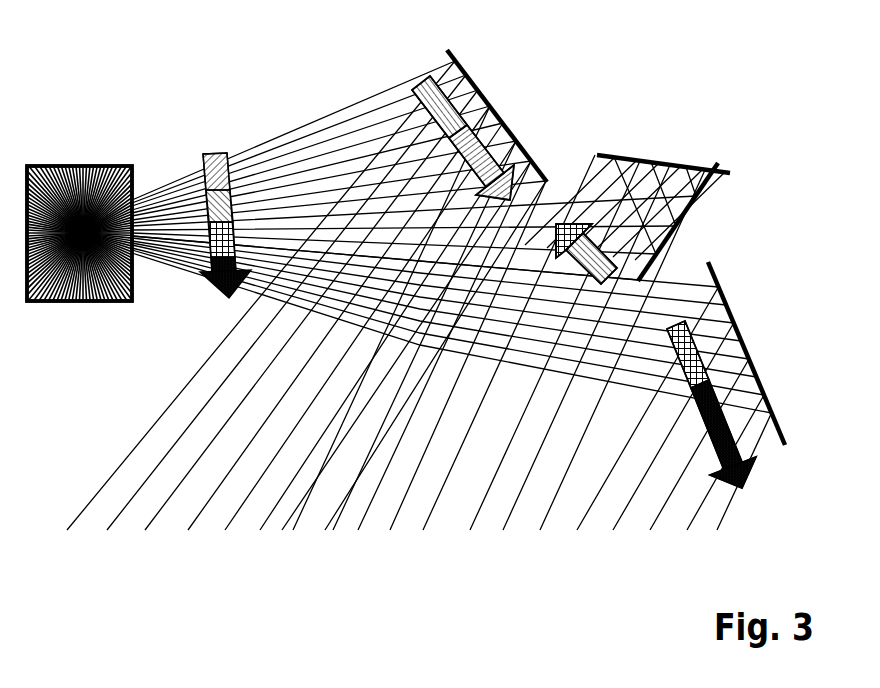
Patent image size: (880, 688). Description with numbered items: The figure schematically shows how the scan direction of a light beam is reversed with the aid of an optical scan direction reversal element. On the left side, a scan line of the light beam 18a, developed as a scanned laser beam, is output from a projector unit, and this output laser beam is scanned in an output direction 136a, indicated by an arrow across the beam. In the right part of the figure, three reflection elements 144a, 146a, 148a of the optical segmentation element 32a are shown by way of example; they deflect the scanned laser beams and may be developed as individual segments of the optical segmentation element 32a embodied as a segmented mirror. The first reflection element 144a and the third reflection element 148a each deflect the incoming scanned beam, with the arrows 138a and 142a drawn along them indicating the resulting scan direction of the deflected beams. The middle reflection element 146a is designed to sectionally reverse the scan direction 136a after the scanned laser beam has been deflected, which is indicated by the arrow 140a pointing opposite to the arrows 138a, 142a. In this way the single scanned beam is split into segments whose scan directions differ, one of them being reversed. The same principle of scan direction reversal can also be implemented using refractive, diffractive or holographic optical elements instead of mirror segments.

The light beam 18a is at (167, 188).
The output direction 136a is at (222, 152).
The arrow 138a is at (466, 78).
The reflection element 144a is at (499, 112).
The optical segmentation element 32a is at (658, 140).
The middle reflection element 146a is at (684, 156).
The arrow 140a is at (612, 242).
The reflection element 148a is at (731, 316).
The arrow 142a is at (722, 384).